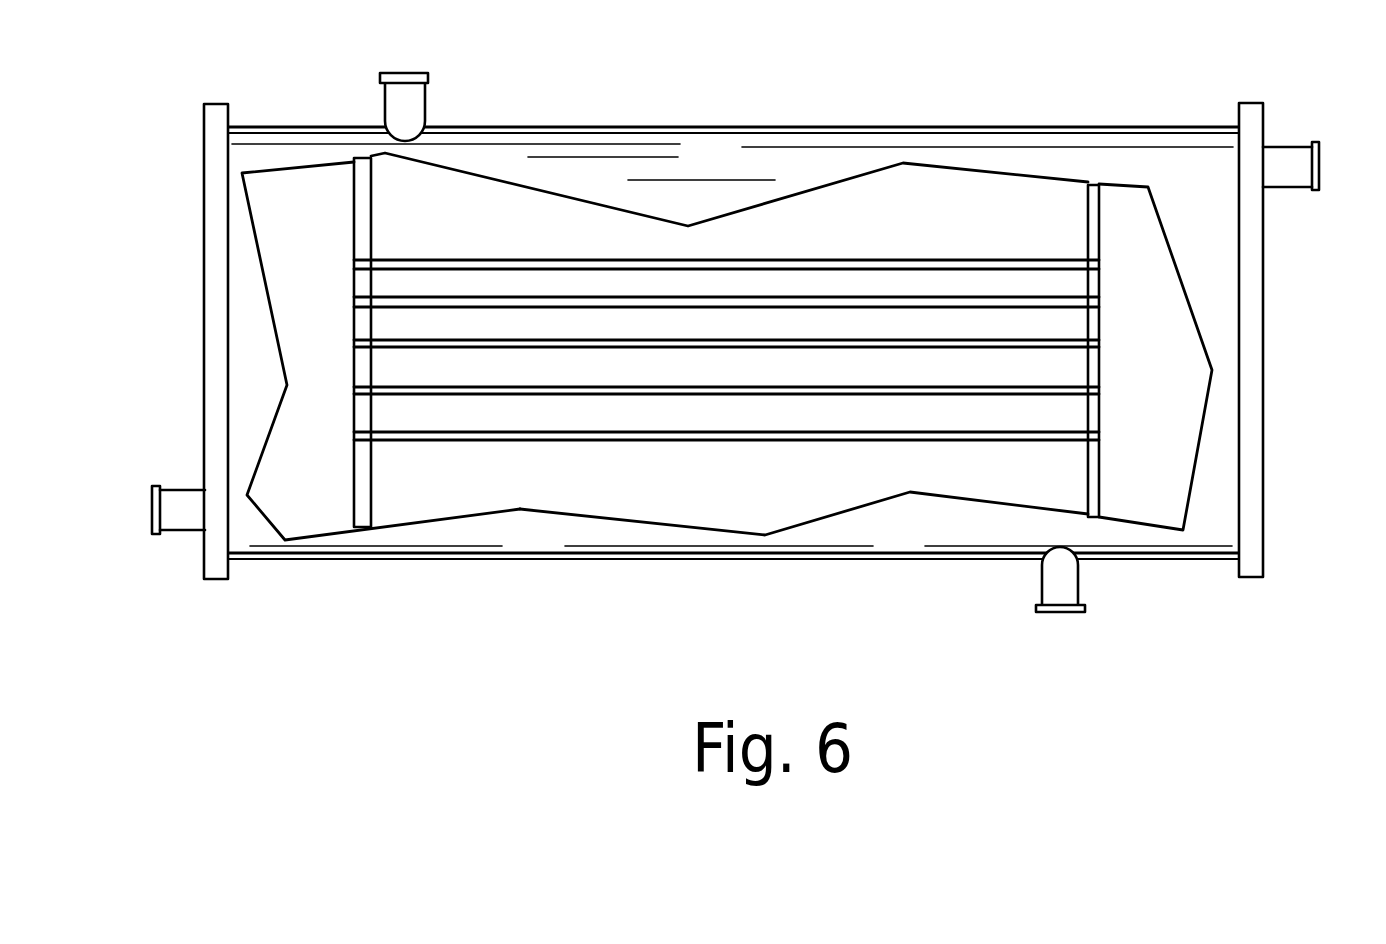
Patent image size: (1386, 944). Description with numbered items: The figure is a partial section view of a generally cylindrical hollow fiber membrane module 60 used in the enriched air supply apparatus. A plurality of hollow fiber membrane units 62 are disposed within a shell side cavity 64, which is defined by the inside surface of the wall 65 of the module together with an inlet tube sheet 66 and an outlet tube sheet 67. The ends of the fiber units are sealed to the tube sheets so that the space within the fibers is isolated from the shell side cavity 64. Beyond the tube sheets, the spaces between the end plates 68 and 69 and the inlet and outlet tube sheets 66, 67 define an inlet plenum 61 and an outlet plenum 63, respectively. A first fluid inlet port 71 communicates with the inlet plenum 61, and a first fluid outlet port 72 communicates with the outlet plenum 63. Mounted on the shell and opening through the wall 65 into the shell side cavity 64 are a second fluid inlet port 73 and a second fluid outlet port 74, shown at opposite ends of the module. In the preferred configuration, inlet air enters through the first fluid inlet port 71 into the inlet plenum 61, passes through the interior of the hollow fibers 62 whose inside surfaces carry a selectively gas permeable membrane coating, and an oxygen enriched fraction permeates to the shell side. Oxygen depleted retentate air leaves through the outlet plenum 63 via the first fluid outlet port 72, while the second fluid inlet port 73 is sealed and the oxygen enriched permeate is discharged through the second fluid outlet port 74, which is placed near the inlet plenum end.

The membrane module 60 is at (462, 583).
The inlet plenum 61 is at (343, 353).
The hollow fiber membrane unit 62 is at (805, 438).
The outlet plenum 63 is at (1182, 457).
The shell side cavity 64 is at (691, 502).
The wall 65 is at (627, 560).
The inlet tube sheet 66 is at (353, 197).
The outlet tube sheet 67 is at (1103, 480).
The end plate 68 is at (215, 410).
The end plate 69 is at (1253, 388).
The first fluid inlet port 71 is at (152, 510).
The first fluid outlet port 72 is at (1318, 167).
The second fluid inlet port 73 is at (1062, 614).
The second fluid outlet port 74 is at (407, 72).